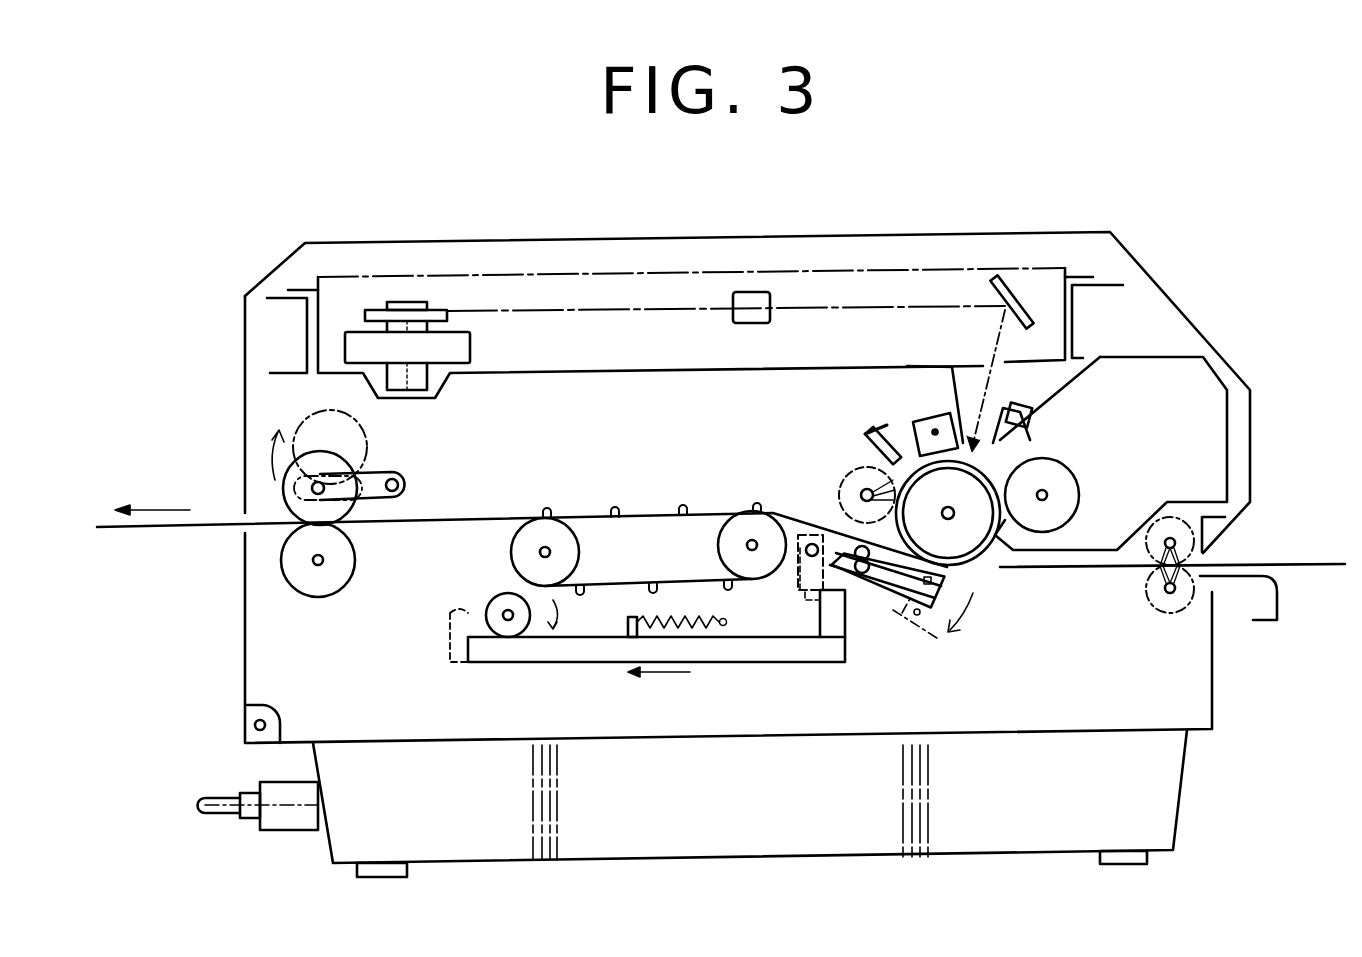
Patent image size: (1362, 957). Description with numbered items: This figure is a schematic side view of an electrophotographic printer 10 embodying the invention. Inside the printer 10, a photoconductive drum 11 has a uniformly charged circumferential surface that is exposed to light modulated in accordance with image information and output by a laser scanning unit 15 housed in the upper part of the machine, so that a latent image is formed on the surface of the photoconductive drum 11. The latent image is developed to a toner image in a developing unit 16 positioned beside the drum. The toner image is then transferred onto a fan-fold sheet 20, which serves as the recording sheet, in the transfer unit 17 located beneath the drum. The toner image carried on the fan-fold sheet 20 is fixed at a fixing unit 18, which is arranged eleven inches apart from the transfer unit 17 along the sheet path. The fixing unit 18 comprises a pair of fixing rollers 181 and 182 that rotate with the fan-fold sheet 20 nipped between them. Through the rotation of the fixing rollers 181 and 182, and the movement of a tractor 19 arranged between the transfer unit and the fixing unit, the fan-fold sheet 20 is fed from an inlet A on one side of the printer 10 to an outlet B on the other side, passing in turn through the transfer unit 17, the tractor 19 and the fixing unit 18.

The electrophotographic printer 10 is at (1030, 232).
The photoconductive drum 11 is at (977, 535).
The laser scanning unit 15 is at (754, 266).
The developing unit 16 is at (1062, 487).
The transfer unit 17 is at (925, 604).
The fixing unit 18 is at (268, 529).
The fixing roller 181 is at (290, 490).
The fixing roller 182 is at (308, 586).
The tractor 19 is at (662, 496).
The fan-fold sheet 20 is at (800, 518).
The inlet A is at (1208, 553).
The outlet B is at (233, 534).